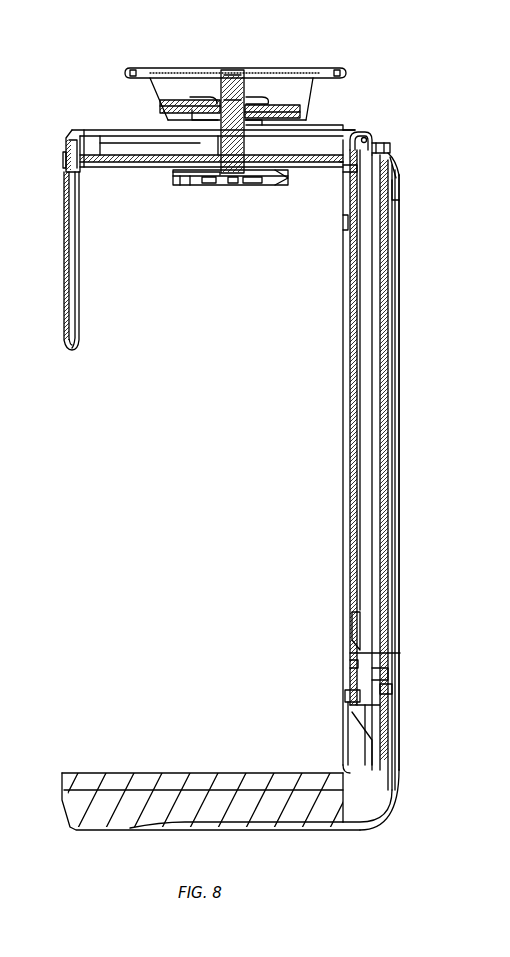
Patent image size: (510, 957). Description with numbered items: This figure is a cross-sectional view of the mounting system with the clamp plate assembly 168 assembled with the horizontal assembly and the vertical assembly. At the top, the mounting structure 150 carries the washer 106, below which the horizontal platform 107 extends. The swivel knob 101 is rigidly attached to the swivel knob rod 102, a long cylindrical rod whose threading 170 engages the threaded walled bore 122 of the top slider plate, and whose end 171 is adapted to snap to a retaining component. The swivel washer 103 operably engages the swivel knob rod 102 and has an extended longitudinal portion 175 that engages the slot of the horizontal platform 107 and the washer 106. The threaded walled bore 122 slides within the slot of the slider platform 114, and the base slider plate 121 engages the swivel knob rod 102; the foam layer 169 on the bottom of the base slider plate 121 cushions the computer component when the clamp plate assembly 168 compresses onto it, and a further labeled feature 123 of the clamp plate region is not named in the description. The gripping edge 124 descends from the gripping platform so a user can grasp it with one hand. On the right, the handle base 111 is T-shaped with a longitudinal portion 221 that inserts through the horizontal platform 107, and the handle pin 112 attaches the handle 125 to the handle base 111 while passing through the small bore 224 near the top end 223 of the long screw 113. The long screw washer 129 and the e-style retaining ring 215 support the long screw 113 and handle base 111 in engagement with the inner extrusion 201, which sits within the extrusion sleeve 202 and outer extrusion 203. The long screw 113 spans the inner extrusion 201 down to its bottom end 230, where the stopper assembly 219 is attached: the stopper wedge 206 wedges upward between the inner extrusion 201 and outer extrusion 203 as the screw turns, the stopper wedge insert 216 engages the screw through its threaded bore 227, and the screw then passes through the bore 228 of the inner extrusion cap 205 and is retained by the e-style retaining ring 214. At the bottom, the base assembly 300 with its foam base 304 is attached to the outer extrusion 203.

The swivel knob 101 is at (233, 76).
The swivel knob rod 102 is at (268, 120).
The swivel washer 103 is at (207, 120).
The washer 106 is at (273, 123).
The horizontal platform 107 is at (100, 143).
The handle base 111 is at (388, 152).
The handle pin 112 is at (372, 140).
The long screw 113 is at (372, 456).
The slider platform 114 is at (66, 152).
The base slider plate 121 is at (175, 181).
The threaded walled bore 122 is at (175, 178).
The bracket recess 123 is at (246, 182).
The gripping edge 124 is at (66, 286).
The handle 125 is at (367, 135).
The long screw washer 129 is at (397, 192).
The mounting structure 150 is at (314, 88).
The clamp plate assembly 168 is at (290, 184).
The foam layer 169 is at (188, 186).
The threading 170 is at (215, 184).
The end 171 is at (237, 184).
The extended longitudinal portion 175 is at (180, 146).
The inner extrusion 201 is at (395, 588).
The extrusion sleeve 202 is at (345, 225).
The outer extrusion 203 is at (400, 626).
The inner extrusion cap 205 is at (398, 700).
The stopper wedge 206 is at (353, 632).
The e-style retaining ring 214 is at (347, 698).
The e-style retaining ring 215 is at (345, 166).
The stopper wedge insert 216 is at (386, 670).
The stopper assembly 219 is at (338, 656).
The longitudinal portion 221 is at (395, 176).
The top end 223 is at (393, 160).
The small bore 224 is at (366, 133).
The threaded bore 227 is at (348, 660).
The bore 228 is at (392, 690).
The bottom end 230 is at (365, 653).
The base assembly 300 is at (404, 802).
The foam base 304 is at (140, 780).